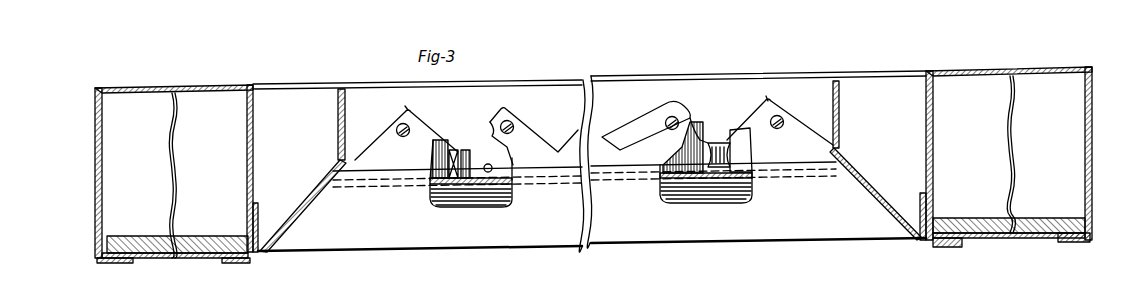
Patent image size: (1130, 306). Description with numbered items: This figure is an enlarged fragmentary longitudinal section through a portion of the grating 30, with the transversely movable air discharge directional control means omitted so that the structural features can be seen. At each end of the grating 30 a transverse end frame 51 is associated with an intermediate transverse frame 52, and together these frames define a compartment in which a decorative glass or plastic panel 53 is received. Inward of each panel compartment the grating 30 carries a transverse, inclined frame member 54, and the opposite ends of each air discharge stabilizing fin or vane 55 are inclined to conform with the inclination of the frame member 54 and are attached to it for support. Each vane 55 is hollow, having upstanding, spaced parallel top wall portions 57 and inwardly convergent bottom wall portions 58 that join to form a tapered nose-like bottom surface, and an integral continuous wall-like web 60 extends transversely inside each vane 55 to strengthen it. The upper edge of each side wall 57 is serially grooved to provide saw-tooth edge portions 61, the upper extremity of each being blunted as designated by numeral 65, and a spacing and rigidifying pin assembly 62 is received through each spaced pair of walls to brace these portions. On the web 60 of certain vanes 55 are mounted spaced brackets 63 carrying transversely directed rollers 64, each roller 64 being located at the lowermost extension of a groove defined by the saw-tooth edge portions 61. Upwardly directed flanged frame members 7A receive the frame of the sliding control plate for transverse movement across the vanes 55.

The grating 30 is at (902, 68).
The transverse end frame 51 is at (95, 121).
The intermediate transverse frame 52 is at (255, 146).
The decorative glass or plastic panel 53 is at (174, 258).
The transverse inclined frame member 54 is at (312, 200).
The air discharge stabilizing fin 55 is at (480, 248).
The top wall portion 57 is at (634, 128).
The bottom wall portion 58 is at (795, 238).
The web 60 is at (430, 197).
The saw-tooth edge portion 61 is at (427, 126).
The spacing and rigidifying pin assembly 62 is at (395, 129).
The bracket 63 is at (505, 173).
The roller 64 is at (728, 155).
The blunted upper extremity 65 is at (408, 110).
The upwardly directed flanged frame member 7A is at (338, 110).